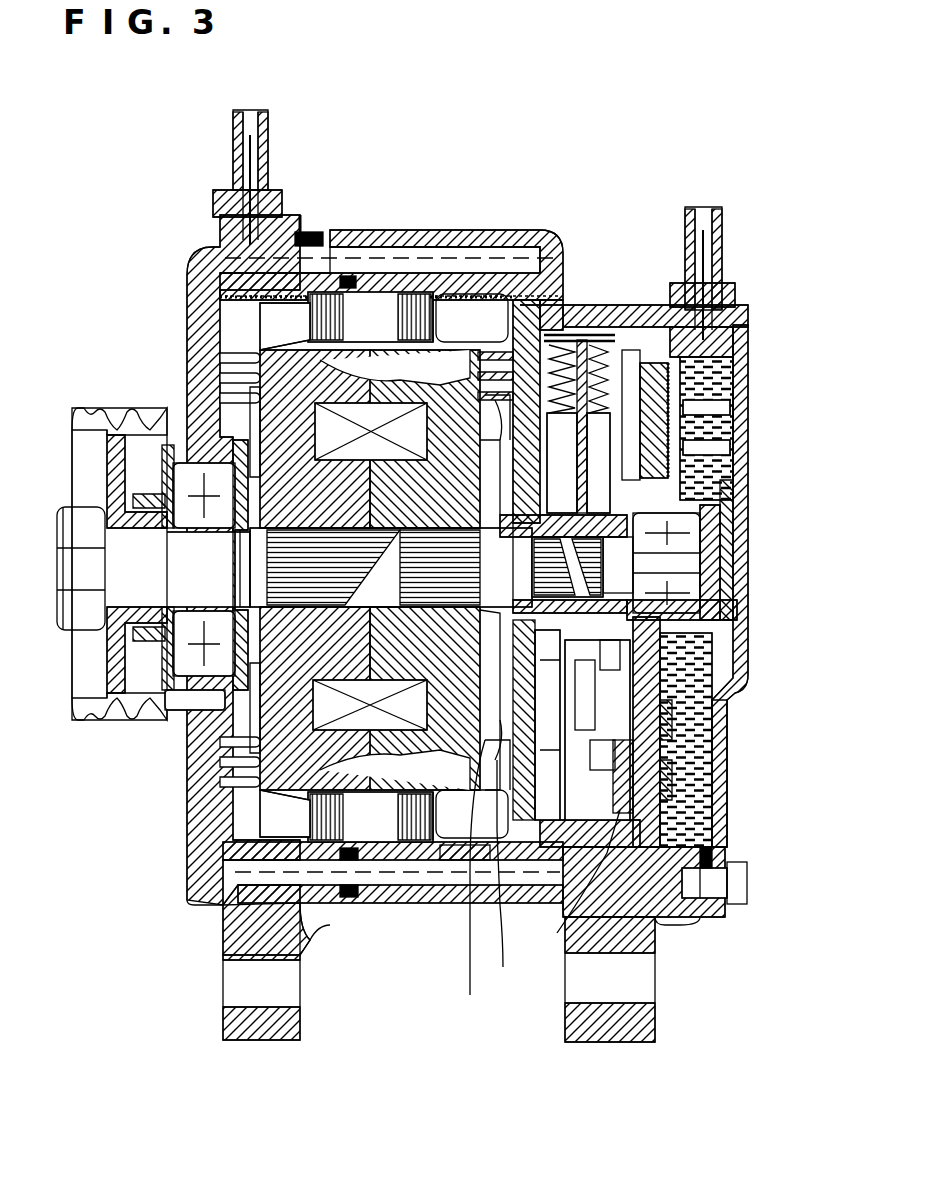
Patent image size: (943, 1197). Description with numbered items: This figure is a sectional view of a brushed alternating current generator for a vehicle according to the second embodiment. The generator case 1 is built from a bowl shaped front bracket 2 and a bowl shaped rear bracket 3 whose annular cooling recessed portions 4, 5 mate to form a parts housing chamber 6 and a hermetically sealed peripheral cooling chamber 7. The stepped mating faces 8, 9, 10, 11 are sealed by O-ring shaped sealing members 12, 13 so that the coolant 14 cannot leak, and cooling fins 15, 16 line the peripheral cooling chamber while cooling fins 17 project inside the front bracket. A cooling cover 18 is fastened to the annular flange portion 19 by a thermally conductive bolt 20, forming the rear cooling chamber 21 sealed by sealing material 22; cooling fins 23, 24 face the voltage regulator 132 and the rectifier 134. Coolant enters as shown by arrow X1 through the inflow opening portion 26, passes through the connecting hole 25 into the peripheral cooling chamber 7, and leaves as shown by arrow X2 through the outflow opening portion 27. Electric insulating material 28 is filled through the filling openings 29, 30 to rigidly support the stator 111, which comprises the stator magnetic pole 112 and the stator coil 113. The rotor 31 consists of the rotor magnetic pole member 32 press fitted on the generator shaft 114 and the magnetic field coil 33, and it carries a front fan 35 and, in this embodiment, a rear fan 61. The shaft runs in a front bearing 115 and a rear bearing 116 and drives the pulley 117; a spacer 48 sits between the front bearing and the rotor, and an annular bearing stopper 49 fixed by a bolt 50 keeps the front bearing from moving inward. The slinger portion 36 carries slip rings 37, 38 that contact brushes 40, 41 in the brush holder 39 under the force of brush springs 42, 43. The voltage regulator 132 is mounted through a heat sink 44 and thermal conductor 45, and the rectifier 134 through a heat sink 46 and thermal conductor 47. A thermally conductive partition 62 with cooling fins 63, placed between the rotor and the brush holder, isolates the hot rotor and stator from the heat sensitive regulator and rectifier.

The generator case 1 is at (362, 1022).
The front bracket 2 is at (302, 955).
The rear bracket 3 is at (340, 905).
The cooling recessed portion 4 is at (225, 890).
The cooling recessed portion 5 is at (413, 875).
The parts housing chamber 6 is at (230, 852).
The peripheral cooling chamber 7 is at (393, 885).
The mating face 8 is at (348, 277).
The mating face 9 is at (390, 293).
The mating face 10 is at (300, 230).
The mating face 11 is at (333, 275).
The sealing member 12 is at (368, 278).
The sealing member 13 is at (313, 227).
The coolant 14 is at (700, 677).
The cooling fins 15 is at (222, 860).
The cooling fins 16 is at (427, 880).
The cooling fins 17 is at (225, 808).
The cooling cover 18 is at (715, 808).
The annular flange portion 19 is at (697, 920).
The bolt 20 is at (745, 883).
The rear cooling chamber 21 is at (597, 853).
The sealing material 22 is at (740, 327).
The cooling fins 23 is at (690, 425).
The cooling fins 24 is at (665, 790).
The connecting hole 25 is at (668, 923).
The inflow opening portion 26 is at (712, 220).
The outflow opening portion 27 is at (252, 147).
The electric insulating material 28 is at (467, 287).
The filling opening 29 is at (240, 300).
The filling opening 30 is at (565, 300).
The rotor 31 is at (100, 168).
The rotor magnetic pole member 32 is at (250, 300).
The magnetic field coil 33 is at (300, 345).
The fan 35 is at (235, 395).
The slinger portion 36 is at (680, 495).
The slip ring 37 is at (550, 615).
The slip ring 38 is at (597, 620).
The brush holder 39 is at (573, 335).
The brush 40 is at (693, 580).
The brush 41 is at (695, 560).
The brush spring 42 is at (590, 340).
The brush spring 43 is at (635, 320).
The heat sink 44 is at (690, 400).
The thermal conductor 45 is at (685, 447).
The heat sink 46 is at (680, 717).
The thermal conductor 47 is at (660, 650).
The spacer 48 is at (155, 673).
The bearing stopper 49 is at (183, 750).
The bolt 50 is at (173, 718).
The fan 61 is at (474, 884).
The partition 62 is at (572, 884).
The cooling fins 63 is at (520, 879).
The stator 111 is at (422, 446).
The stator magnetic pole 112 is at (377, 303).
The stator coil 113 is at (460, 317).
The generator shaft 114 is at (137, 590).
The front bearing 115 is at (178, 468).
The rear bearing 116 is at (687, 530).
The pulley 117 is at (145, 665).
The voltage regulator 132 is at (690, 385).
The rectifier 134 is at (665, 675).
The arrow X1 is at (717, 263).
The arrow X2 is at (233, 153).